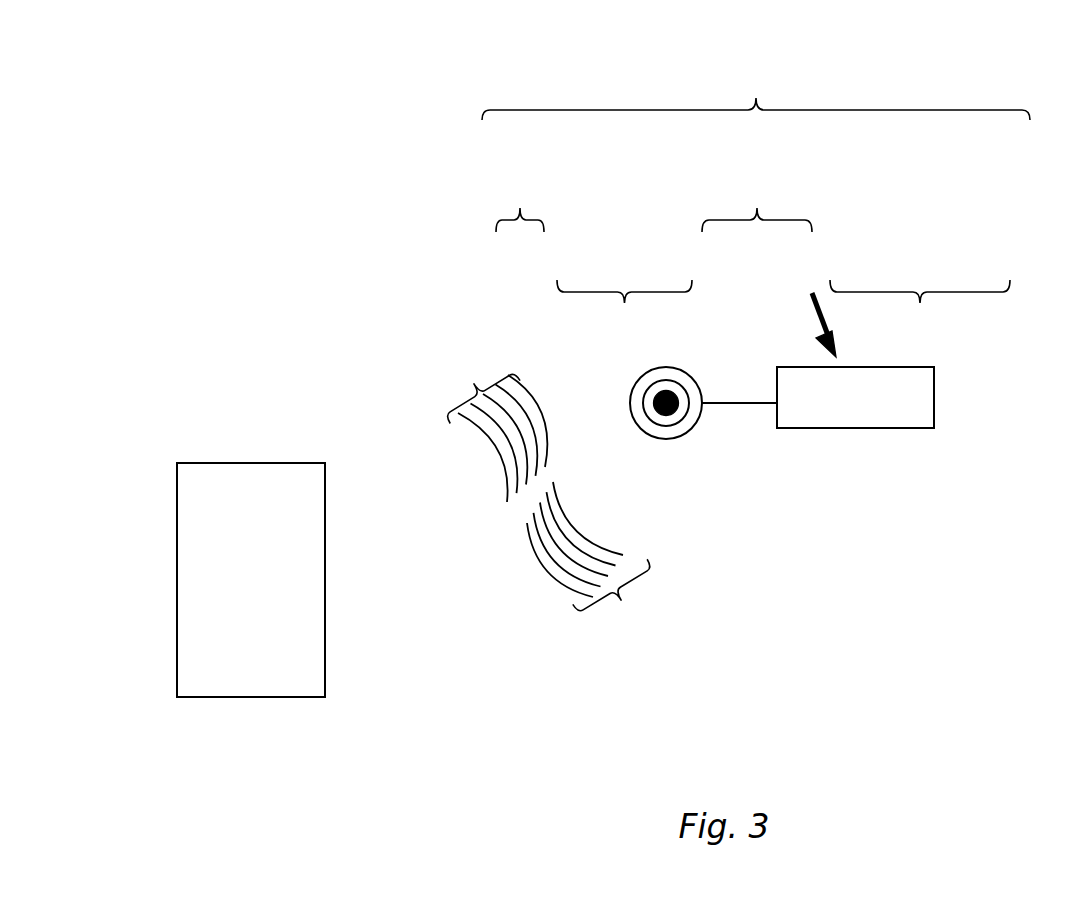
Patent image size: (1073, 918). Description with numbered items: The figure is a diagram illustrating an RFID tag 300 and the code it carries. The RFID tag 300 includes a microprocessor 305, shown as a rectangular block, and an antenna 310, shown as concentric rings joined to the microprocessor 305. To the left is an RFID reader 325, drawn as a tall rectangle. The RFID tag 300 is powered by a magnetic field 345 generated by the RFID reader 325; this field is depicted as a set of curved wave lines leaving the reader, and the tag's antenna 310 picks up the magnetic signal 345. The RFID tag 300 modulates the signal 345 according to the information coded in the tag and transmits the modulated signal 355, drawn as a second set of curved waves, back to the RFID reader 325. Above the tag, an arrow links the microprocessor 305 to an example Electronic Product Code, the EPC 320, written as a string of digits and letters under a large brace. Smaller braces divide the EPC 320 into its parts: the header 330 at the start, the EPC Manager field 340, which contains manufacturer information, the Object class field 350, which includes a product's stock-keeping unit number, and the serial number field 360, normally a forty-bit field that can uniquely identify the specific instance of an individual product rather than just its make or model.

The RFID tag 300 is at (701, 459).
The microprocessor 305 is at (837, 417).
The antenna 310 is at (643, 413).
The EPC 320 is at (757, 97).
The RFID reader 325 is at (250, 473).
The header 330 is at (520, 197).
The EPC Manager field 340 is at (622, 310).
The magnetic field 345 is at (474, 384).
The Object class field 350 is at (757, 205).
The modulated signal 355 is at (631, 619).
The serial number field 360 is at (915, 310).